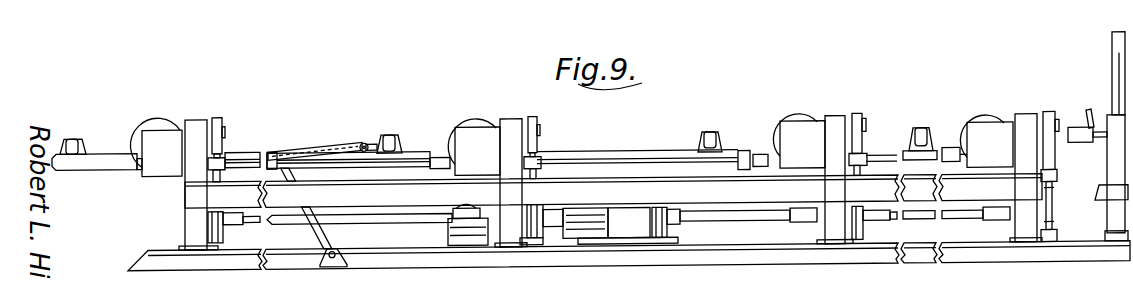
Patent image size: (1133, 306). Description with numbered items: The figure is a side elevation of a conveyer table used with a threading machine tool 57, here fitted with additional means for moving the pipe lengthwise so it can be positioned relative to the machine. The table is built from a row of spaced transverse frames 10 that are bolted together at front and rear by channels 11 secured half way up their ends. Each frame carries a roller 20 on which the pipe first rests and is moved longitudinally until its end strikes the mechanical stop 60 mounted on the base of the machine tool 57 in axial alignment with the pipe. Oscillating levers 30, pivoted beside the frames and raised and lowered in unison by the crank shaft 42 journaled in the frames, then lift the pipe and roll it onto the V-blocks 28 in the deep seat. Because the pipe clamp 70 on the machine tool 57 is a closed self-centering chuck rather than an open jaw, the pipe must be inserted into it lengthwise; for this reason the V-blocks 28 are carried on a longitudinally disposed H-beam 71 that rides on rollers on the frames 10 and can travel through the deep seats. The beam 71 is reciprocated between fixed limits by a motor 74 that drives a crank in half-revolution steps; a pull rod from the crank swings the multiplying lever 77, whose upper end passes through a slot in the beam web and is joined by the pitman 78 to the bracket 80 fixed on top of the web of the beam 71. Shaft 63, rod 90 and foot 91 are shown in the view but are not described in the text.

The frame 10 is at (218, 106).
The channel 11 is at (555, 192).
The roller 20 is at (157, 118).
The V-block 28 is at (70, 137).
The oscillating lever 30 is at (267, 108).
The crank shaft 42 is at (270, 224).
The machine tool 57 is at (1110, 162).
The mechanical stop 60 is at (1086, 114).
The shaft 63 is at (645, 160).
The pipe clamp 70 is at (1113, 38).
The H-beam 71 is at (101, 155).
The motor 74 is at (450, 220).
The multiplying lever 77 is at (328, 239).
The pitman 78 is at (327, 150).
The bracket 80 is at (367, 143).
The rod 90 is at (1053, 209).
The bracket foot 91 is at (228, 236).